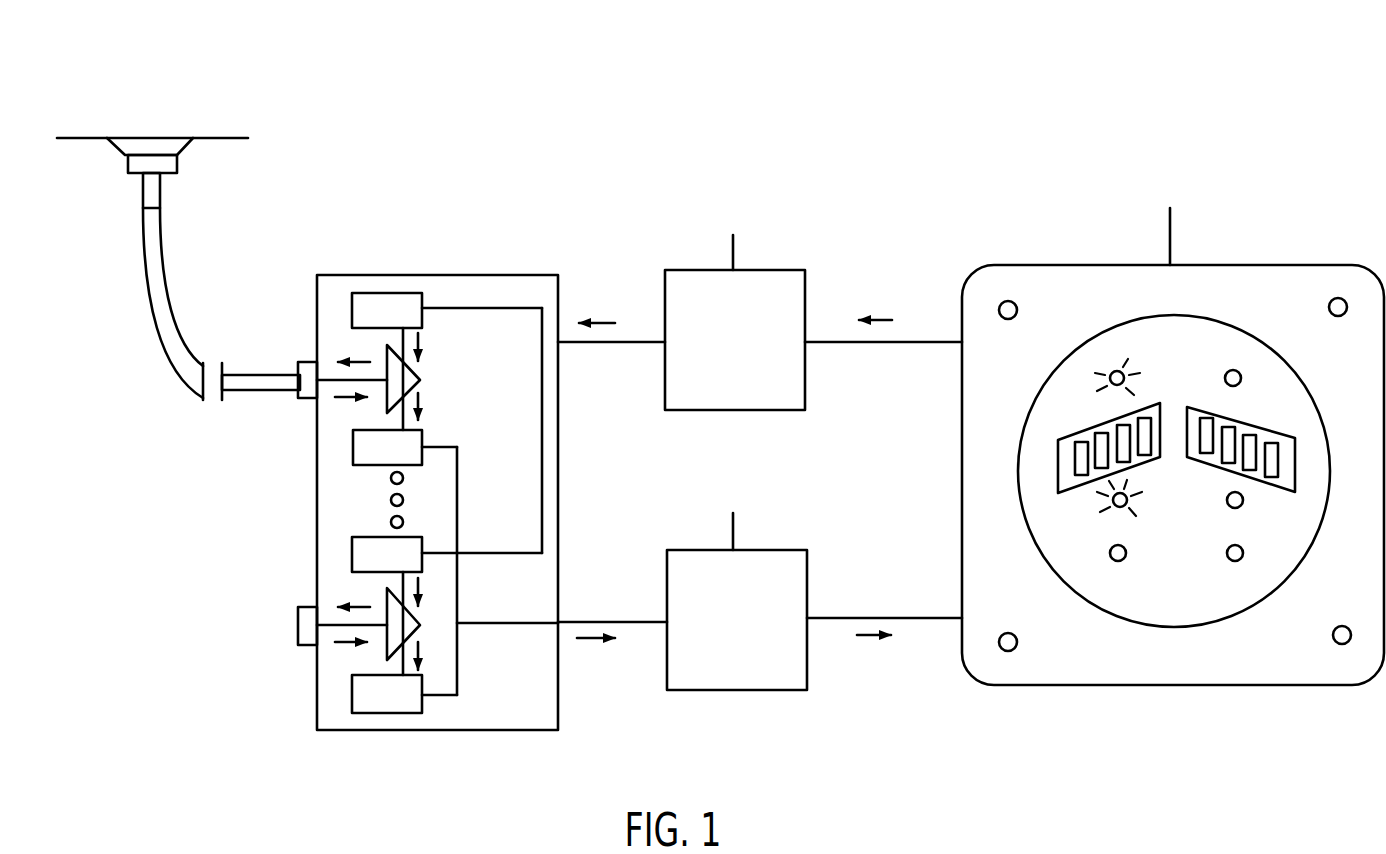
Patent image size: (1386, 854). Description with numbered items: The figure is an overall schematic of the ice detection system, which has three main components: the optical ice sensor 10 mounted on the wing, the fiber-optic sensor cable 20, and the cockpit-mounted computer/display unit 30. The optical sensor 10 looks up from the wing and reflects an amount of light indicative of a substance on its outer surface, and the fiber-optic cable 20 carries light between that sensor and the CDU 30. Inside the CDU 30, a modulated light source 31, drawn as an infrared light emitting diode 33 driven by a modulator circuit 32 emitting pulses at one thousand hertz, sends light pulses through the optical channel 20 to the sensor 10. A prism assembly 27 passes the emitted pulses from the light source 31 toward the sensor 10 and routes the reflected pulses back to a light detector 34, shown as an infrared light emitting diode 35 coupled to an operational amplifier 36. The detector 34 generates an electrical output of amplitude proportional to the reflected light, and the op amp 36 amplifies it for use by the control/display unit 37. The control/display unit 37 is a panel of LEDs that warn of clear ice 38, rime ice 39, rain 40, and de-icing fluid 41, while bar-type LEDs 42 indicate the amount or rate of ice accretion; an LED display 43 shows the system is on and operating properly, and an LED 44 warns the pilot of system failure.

The optical ice sensor 10 is at (214, 118).
The fiber-optic sensor cable 20 is at (168, 290).
The prism assembly 27 is at (405, 378).
The computer/display unit 30 is at (873, 689).
The modulated light source 31 is at (620, 274).
The modulator circuit 32 is at (787, 287).
The infrared light emitting diode 33 is at (403, 308).
The light detector 34 is at (449, 501).
The infrared light emitting diode 35 is at (370, 448).
The operational amplifier 36 is at (787, 567).
The control/display unit 37 is at (1055, 685).
The clear ice LED 38 is at (1122, 560).
The rime ice LED 39 is at (1123, 510).
The rain LED 40 is at (1237, 560).
The de-icing fluid LED 41 is at (1238, 508).
The ice accretion LEDs 42 is at (1198, 410).
The system operating LED display 43 is at (1113, 372).
The system failure LED 44 is at (1234, 370).